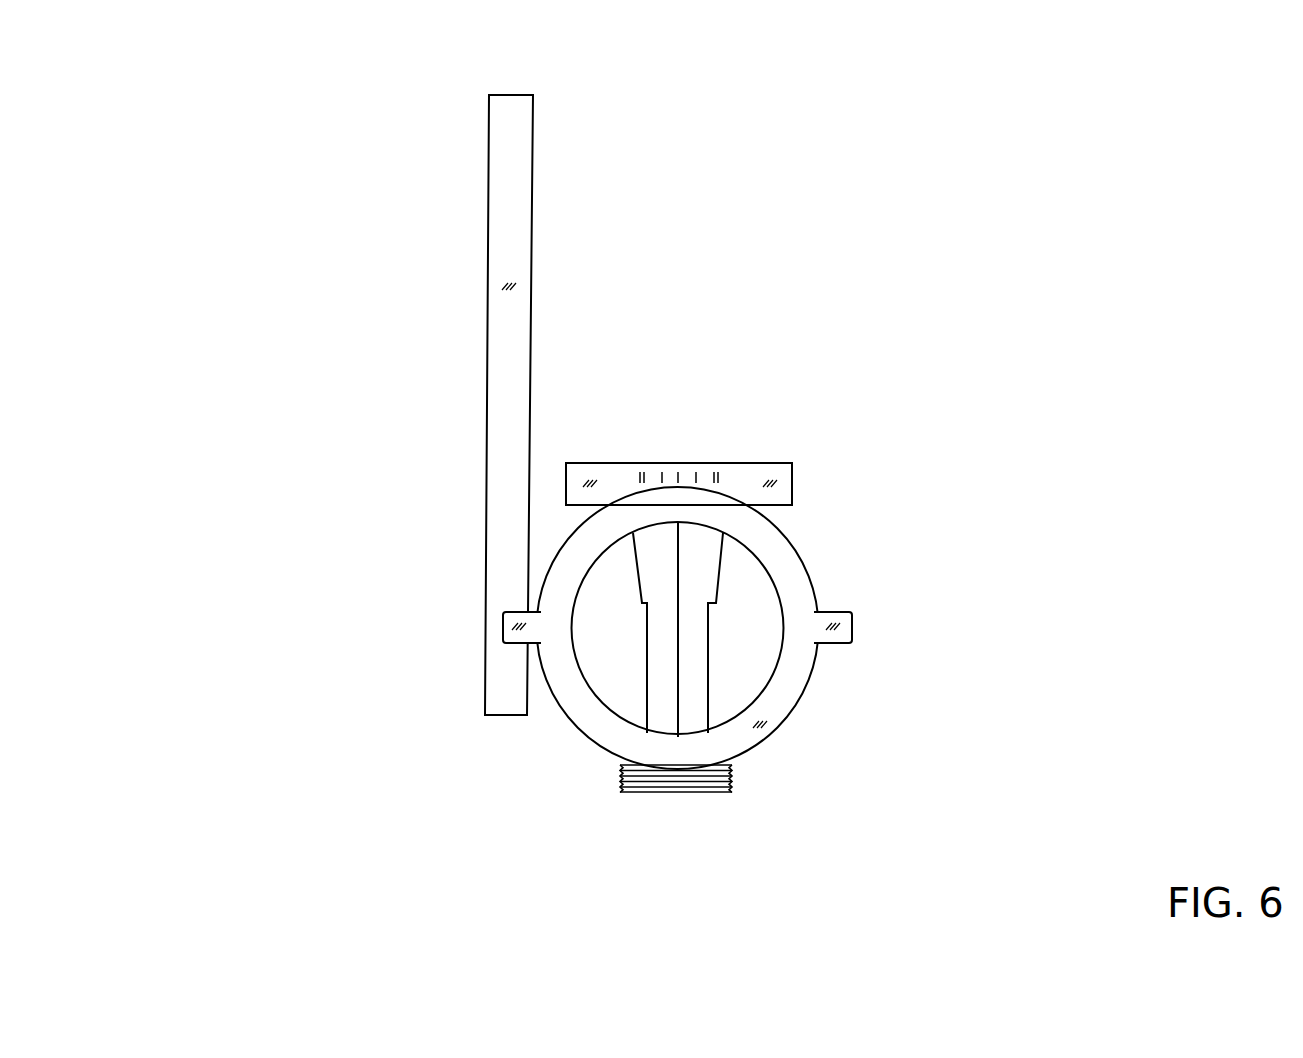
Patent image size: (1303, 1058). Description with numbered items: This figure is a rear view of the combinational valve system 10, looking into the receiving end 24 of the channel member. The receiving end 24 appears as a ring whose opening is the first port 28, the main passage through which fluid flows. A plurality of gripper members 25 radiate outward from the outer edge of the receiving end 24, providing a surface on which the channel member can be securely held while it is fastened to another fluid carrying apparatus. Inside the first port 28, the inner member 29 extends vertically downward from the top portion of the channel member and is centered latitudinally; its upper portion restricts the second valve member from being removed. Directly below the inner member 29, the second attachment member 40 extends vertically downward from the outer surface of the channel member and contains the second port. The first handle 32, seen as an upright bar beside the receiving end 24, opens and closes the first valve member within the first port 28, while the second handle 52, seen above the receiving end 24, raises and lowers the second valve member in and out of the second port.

The combinational valve system 10 is at (195, 120).
The receiving end 24 is at (728, 723).
The gripper members 25 is at (840, 613).
The first port 28 is at (748, 675).
The inner member 29 is at (647, 673).
The first handle 32 is at (517, 172).
The second attachment member 40 is at (707, 787).
The second handle 52 is at (747, 473).